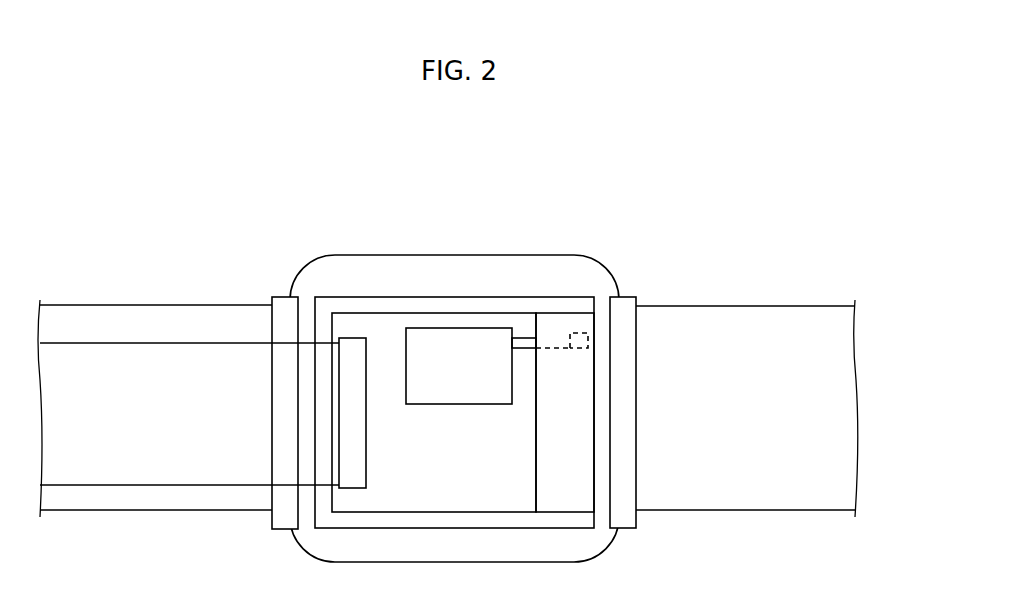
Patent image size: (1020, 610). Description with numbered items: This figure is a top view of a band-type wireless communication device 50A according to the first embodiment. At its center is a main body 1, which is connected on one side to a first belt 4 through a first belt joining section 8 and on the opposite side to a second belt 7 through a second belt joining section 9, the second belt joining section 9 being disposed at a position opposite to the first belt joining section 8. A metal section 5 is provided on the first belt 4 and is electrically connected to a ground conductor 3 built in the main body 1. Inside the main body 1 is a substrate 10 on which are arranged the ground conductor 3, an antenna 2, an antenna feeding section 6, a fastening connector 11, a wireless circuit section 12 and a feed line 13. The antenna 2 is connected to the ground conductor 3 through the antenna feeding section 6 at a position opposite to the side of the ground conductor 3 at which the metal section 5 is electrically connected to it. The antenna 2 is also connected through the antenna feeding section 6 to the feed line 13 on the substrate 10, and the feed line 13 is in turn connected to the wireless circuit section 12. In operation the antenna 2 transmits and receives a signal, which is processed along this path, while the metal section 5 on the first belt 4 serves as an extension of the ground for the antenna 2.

The main body 1 is at (403, 255).
The antenna 2 is at (573, 497).
The ground conductor 3 is at (440, 313).
The first belt 4 is at (88, 316).
The metal section 5 is at (215, 350).
The antenna feeding section 6 is at (578, 333).
The second belt 7 is at (811, 316).
The first belt joining section 8 is at (283, 297).
The second belt joining section 9 is at (627, 297).
The substrate 10 is at (510, 523).
The fastening connector 11 is at (352, 340).
The wireless circuit section 12 is at (475, 340).
The feed line 13 is at (523, 343).
The band-type wireless communication device 50A is at (772, 190).